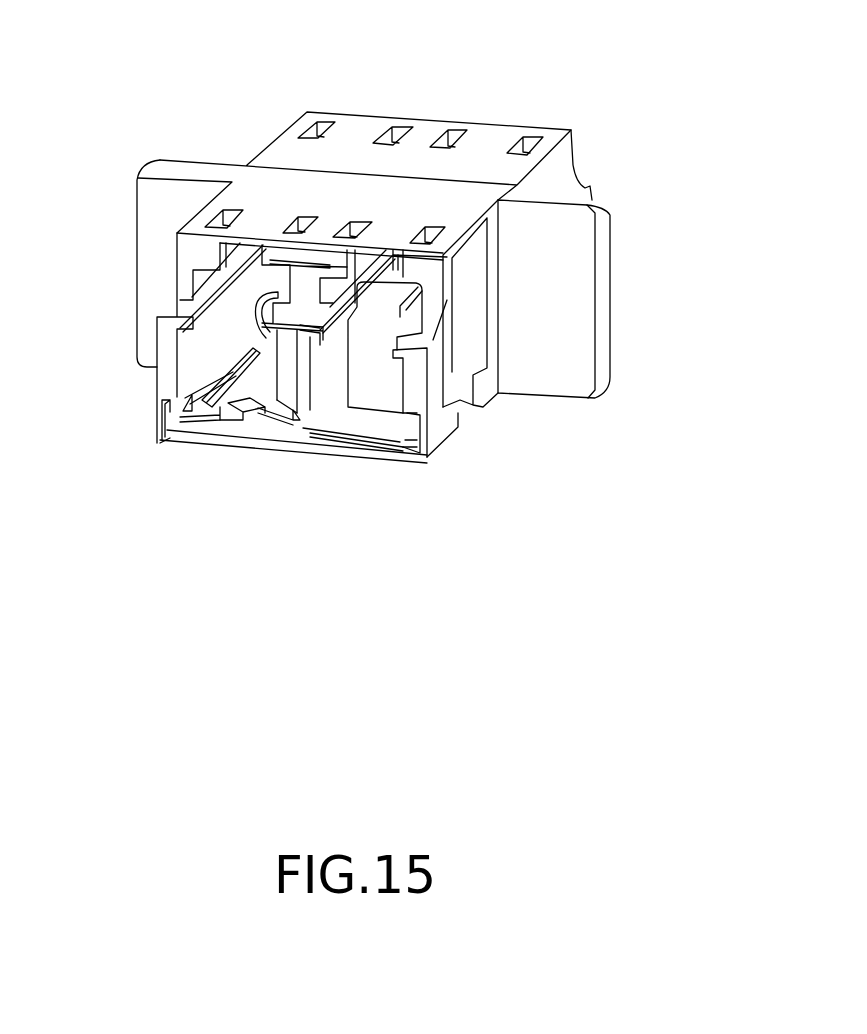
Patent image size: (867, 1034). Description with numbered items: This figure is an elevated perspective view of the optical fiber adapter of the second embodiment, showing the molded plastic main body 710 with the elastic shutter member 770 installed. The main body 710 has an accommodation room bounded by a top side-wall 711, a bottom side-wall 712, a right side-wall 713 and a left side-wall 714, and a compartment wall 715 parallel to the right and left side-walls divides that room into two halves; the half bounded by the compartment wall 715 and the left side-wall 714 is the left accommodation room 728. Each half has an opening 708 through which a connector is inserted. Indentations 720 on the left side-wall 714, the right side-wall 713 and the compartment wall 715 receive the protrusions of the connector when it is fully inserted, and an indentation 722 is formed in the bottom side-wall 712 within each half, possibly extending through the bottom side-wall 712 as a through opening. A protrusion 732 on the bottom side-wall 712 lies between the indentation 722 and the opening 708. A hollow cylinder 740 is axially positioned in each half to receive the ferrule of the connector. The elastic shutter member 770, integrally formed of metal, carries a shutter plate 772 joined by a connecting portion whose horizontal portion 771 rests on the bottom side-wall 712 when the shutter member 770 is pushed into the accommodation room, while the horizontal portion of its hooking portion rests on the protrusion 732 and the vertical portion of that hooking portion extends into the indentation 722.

The opening 708 is at (255, 435).
The main body 710 is at (313, 93).
The top side-wall 711 is at (488, 148).
The bottom side-wall 712 is at (475, 466).
The right side-wall 713 is at (438, 422).
The left side-wall 714 is at (160, 423).
The compartment wall 715 is at (300, 365).
The indentations 720 is at (173, 423).
The indentation 722 is at (232, 416).
The left accommodation room 728 is at (257, 384).
The protrusion 732 is at (238, 412).
The hollow cylinder 740 is at (268, 302).
The elastic shutter member 770 is at (382, 471).
The horizontal portion 771 is at (403, 447).
The shutter plate 772 is at (382, 325).